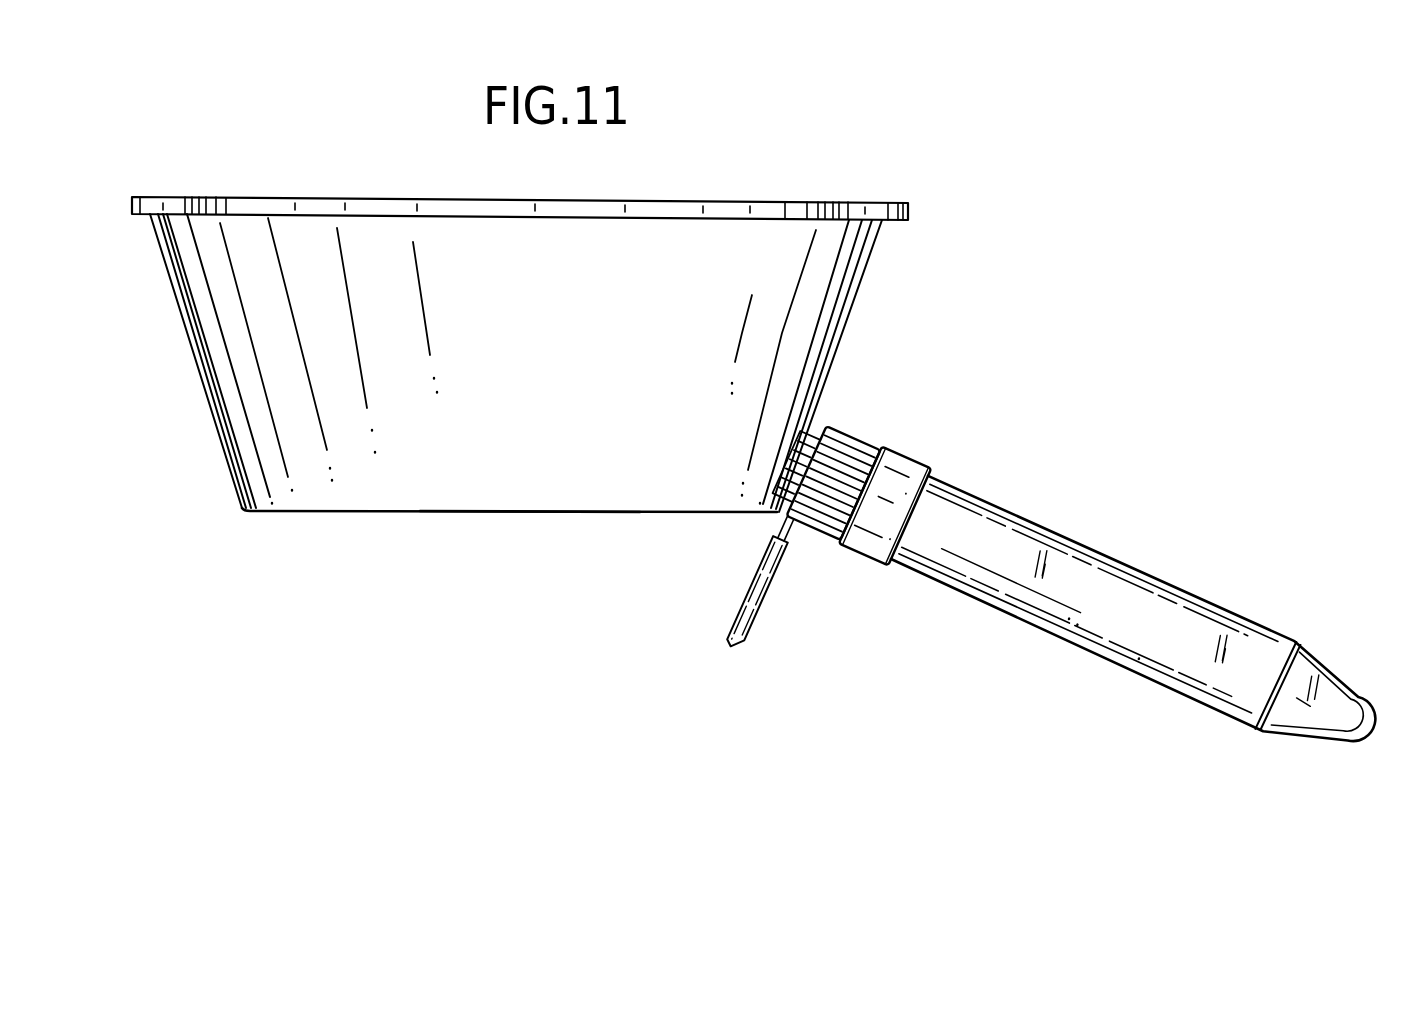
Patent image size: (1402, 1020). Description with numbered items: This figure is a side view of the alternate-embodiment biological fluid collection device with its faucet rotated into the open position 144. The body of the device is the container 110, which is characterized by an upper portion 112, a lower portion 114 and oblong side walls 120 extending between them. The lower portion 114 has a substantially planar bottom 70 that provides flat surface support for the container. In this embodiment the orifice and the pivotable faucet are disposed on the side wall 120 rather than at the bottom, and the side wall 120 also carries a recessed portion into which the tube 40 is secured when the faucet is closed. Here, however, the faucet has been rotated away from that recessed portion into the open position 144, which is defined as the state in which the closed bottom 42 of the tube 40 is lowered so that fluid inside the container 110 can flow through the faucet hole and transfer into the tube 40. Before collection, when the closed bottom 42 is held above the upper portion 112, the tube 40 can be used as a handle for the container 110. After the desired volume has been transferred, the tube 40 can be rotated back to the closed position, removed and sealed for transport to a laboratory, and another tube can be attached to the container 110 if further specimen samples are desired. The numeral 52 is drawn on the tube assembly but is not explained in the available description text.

The open position 144 is at (950, 254).
The container 110 is at (253, 548).
The upper portion 112 is at (278, 196).
The lower portion 114 is at (413, 512).
The substantially planar bottom 70 is at (530, 513).
The side wall 120 is at (778, 447).
The tube 40 is at (1008, 653).
The cap 52 is at (855, 432).
The closed bottom 42 is at (1371, 736).